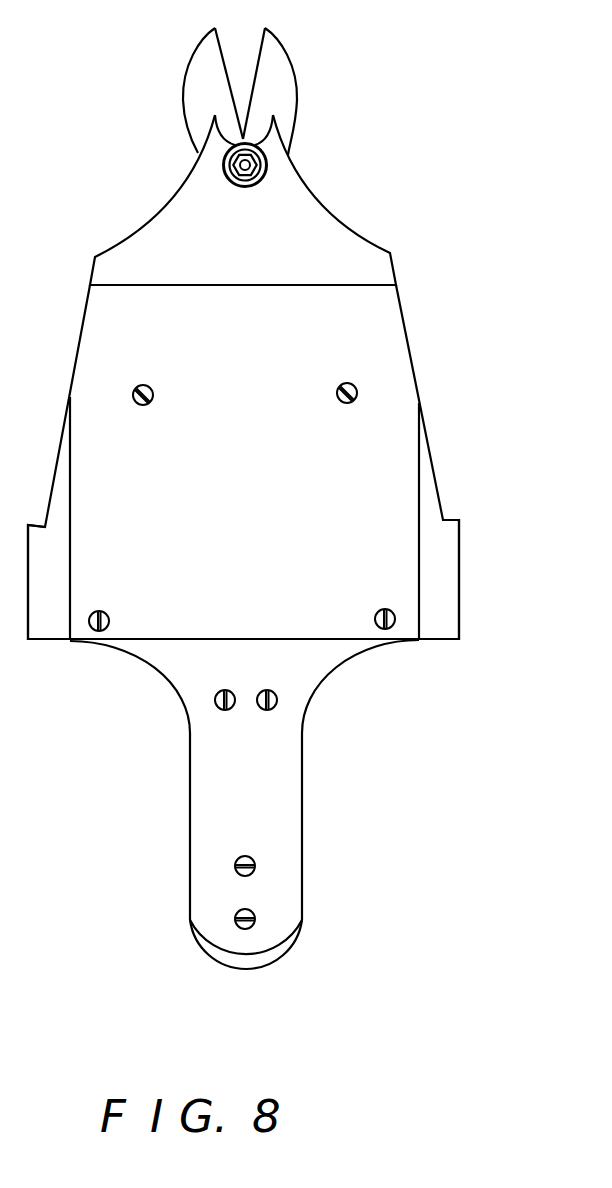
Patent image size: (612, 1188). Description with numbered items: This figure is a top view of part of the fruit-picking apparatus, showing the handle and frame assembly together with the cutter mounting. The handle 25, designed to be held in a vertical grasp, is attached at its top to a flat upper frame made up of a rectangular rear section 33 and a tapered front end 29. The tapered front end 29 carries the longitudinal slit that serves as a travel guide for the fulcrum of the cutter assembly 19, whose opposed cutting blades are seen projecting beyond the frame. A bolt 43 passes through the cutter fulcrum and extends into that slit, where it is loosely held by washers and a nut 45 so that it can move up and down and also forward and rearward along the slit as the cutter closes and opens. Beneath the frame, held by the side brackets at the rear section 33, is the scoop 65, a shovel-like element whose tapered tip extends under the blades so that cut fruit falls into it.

The cutter assembly 19 is at (288, 103).
The handle 25 is at (287, 947).
The tapered front end 29 is at (209, 268).
The rectangular rear section 33 is at (187, 592).
The bolt 43 is at (262, 167).
The nut 45 is at (250, 180).
The scoop 65 is at (455, 589).